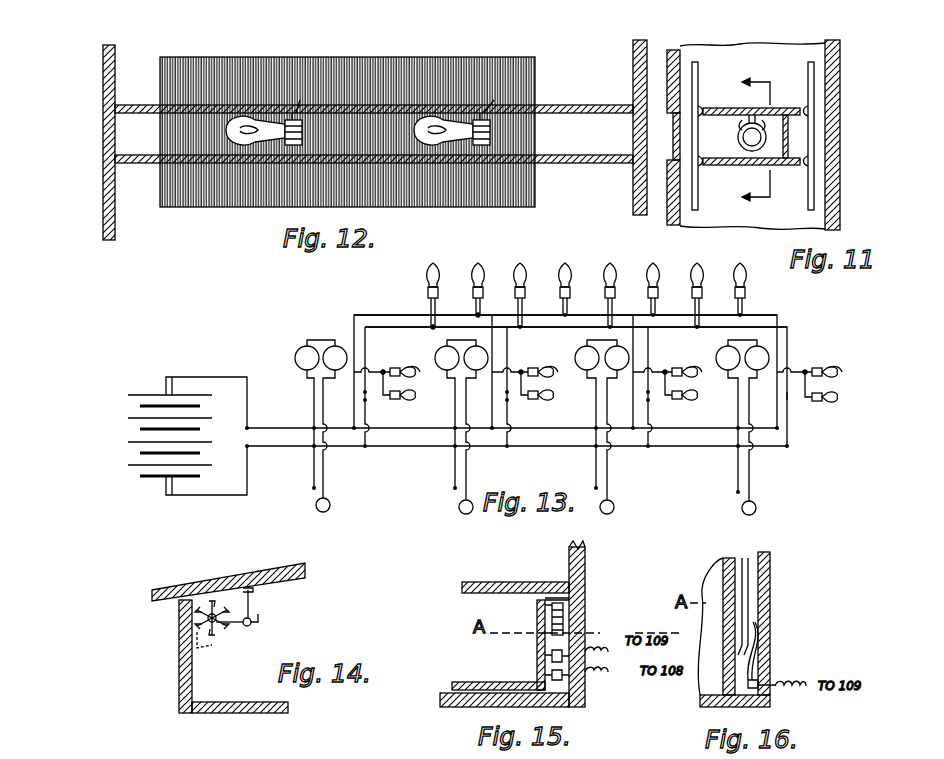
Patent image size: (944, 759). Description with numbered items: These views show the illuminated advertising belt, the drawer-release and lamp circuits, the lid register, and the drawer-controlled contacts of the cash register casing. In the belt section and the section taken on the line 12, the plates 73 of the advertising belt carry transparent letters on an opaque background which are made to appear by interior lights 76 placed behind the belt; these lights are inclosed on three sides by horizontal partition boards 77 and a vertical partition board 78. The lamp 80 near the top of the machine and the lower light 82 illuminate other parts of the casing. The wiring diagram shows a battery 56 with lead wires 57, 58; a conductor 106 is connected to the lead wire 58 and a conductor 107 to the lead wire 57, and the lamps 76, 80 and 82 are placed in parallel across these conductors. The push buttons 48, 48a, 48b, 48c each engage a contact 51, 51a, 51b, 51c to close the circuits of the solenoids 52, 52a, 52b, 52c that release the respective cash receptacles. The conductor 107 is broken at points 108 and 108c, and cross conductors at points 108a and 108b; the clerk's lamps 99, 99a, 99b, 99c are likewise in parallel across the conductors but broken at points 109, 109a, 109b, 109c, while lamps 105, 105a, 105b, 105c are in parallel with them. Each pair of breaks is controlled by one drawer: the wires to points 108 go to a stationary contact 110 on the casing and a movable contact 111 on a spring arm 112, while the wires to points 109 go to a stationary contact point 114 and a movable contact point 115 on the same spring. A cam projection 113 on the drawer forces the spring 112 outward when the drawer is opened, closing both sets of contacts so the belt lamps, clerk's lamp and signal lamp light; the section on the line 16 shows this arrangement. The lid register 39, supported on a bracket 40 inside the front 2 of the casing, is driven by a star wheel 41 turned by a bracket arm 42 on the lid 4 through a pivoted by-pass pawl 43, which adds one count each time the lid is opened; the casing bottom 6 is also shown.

In FIG. 14, the front of the casing 2 is at (180, 640).
In FIG. 14, the lid 4 is at (228, 578).
In FIG. 14, the bottom plate 6 is at (250, 714).
In FIG. 11, the section line 12 is at (751, 141).
In FIG. 15, the section line 16 is at (535, 682).
In FIG. 14, the lid register 39 is at (197, 618).
In FIG. 14, the bracket 40 is at (205, 643).
In FIG. 14, the star wheel 41 is at (239, 633).
In FIG. 14, the bracket arm 42 is at (252, 598).
In FIG. 14, the by-pass pawl 43 is at (275, 624).
In FIG. 13, the push button 48 is at (323, 452).
In FIG. 13, the push button 48a is at (459, 512).
In FIG. 13, the push button 48b is at (603, 513).
In FIG. 13, the push button 48c is at (742, 513).
In FIG. 13, the contact 51 is at (313, 489).
In FIG. 13, the contact 51a is at (452, 489).
In FIG. 13, the contact 51b is at (594, 489).
In FIG. 13, the contact 51c is at (736, 492).
In FIG. 13, the solenoid coils 52 is at (326, 350).
In FIG. 13, the solenoid coils 52a is at (468, 350).
In FIG. 13, the solenoid coils 52b is at (608, 350).
In FIG. 13, the solenoid coils 52c is at (749, 350).
In FIG. 13, the battery 56 is at (130, 428).
In FIG. 13, the lead wire 57 is at (247, 478).
In FIG. 13, the lead wire 58 is at (188, 377).
In FIG. 12, the plates 73 is at (405, 60).
In FIG. 12, the interior lights 76 is at (226, 129).
In FIG. 11, the interior lights 76 is at (754, 150).
In FIG. 13, the interior lights 76 is at (563, 266).
In FIG. 15, the interior lights 76 is at (530, 632).
In FIG. 11, the horizontal partition boards 77 is at (770, 113).
In FIG. 11, the vertical partition board 78 is at (789, 137).
In FIG. 13, the lamp 80 is at (476, 266).
In FIG. 13, the lower light 82 is at (738, 266).
In FIG. 13, the clerk's lamp 99 is at (420, 378).
In FIG. 13, the clerk's lamp 99a is at (557, 378).
In FIG. 13, the clerk's lamp 99b is at (700, 378).
In FIG. 13, the clerk's lamp 99c is at (840, 376).
In FIG. 13, the lamp 105 is at (405, 400).
In FIG. 13, the lamp 105a is at (545, 400).
In FIG. 13, the lamp 105b is at (690, 402).
In FIG. 13, the lamp 105c is at (837, 402).
In FIG. 13, the conductor 106 is at (354, 318).
In FIG. 13, the conductor 107 is at (405, 327).
In FIG. 13, the contact points 108 is at (368, 402).
In FIG. 13, the contact points 108a is at (510, 402).
In FIG. 13, the contact points 108b is at (644, 402).
In FIG. 13, the contact points 108c is at (788, 404).
In FIG. 13, the contact points 109 is at (372, 372).
In FIG. 13, the contact points 109a is at (512, 372).
In FIG. 13, the contact points 109b is at (656, 372).
In FIG. 13, the contact points 109c is at (800, 372).
In FIG. 15, the stationary contact 110 is at (585, 676).
In FIG. 15, the movable contact 111 is at (585, 655).
In FIG. 16, the spring arm 112 is at (766, 642).
In FIG. 15, the cam projection 113 is at (548, 680).
In FIG. 16, the cam projection 113 is at (742, 593).
In FIG. 15, the stationary contact point 114 is at (575, 640).
In FIG. 16, the stationary contact point 114 is at (762, 683).
In FIG. 15, the movable contact point 115 is at (568, 640).
In FIG. 16, the movable contact point 115 is at (730, 703).